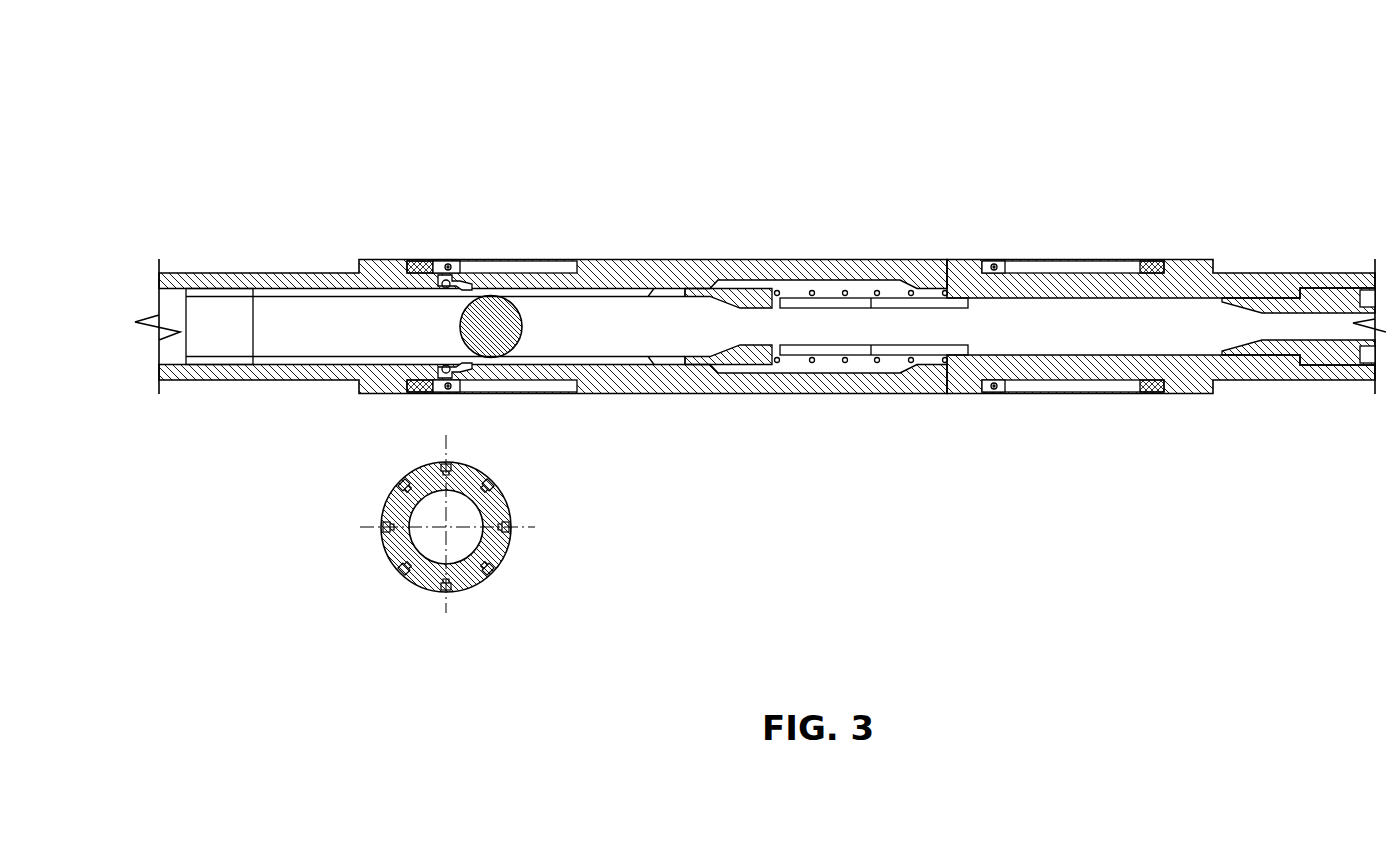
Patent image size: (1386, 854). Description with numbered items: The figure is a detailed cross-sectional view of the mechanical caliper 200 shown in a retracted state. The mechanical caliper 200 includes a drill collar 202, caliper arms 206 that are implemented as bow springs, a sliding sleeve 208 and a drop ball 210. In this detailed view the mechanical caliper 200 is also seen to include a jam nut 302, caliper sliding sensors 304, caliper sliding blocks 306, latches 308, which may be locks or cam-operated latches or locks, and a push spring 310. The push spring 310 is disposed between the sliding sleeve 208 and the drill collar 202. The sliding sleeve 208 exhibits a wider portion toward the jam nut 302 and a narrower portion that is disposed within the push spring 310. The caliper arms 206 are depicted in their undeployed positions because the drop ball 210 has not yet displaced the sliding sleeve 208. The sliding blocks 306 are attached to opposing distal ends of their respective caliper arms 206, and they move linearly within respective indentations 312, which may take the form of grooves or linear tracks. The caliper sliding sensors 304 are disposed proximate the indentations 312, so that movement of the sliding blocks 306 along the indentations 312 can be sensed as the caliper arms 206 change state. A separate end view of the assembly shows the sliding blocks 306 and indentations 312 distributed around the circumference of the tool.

The mechanical caliper 200 is at (1249, 95).
The drill collar 202 is at (955, 375).
The caliper arms 206 is at (703, 262).
The sliding sleeve 208 is at (752, 364).
The drop ball 210 is at (487, 350).
The jam nut 302 is at (222, 308).
The caliper sliding sensors 304 is at (1150, 265).
The caliper sliding blocks 306 is at (448, 261).
The latches 308 is at (462, 274).
The push spring 310 is at (845, 362).
The indentations 312 is at (549, 262).